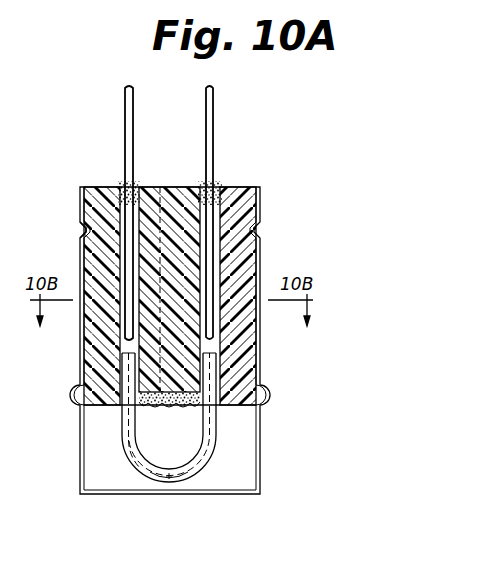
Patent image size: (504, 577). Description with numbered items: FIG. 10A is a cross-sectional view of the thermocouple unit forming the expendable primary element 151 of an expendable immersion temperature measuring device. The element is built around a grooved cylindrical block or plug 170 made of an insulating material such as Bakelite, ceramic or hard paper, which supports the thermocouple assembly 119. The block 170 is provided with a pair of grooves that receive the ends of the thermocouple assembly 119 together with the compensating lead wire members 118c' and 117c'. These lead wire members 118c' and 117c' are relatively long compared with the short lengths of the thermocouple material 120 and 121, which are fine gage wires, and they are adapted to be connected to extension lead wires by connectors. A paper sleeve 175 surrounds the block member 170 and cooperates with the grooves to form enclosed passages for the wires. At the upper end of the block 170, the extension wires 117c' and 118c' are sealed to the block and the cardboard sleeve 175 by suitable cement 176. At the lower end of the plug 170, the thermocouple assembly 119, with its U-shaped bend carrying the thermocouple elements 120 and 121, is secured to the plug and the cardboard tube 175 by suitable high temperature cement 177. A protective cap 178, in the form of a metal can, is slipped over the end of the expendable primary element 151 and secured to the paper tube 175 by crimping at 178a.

The compensating lead wire member 117c' is at (89, 213).
The compensating lead wire member 118c' is at (247, 212).
The cement 176 is at (122, 185).
The grooved cylindrical block 170 is at (151, 186).
The crimp 178a is at (85, 235).
The expendable primary element 151 is at (342, 255).
The protective cap 178 is at (82, 357).
The paper sleeve 175 is at (233, 359).
The high temperature cement 177 is at (178, 410).
The thermocouple element 120 is at (212, 437).
The thermocouple element 121 is at (138, 466).
The thermocouple assembly 119 is at (185, 478).